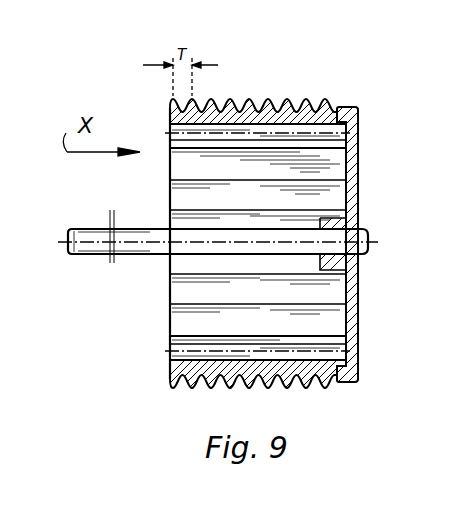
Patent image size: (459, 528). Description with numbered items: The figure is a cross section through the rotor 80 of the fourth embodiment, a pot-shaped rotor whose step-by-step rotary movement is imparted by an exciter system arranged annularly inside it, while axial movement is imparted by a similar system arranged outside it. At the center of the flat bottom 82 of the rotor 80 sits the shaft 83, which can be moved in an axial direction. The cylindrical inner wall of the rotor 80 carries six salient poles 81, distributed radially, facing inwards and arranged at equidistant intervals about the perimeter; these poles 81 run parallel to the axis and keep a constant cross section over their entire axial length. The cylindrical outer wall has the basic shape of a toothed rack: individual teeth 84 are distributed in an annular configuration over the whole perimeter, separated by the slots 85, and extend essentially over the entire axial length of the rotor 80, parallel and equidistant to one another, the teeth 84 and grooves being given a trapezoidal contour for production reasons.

The rotor 80 is at (343, 95).
The salient poles 81 is at (350, 131).
The flat bottom 82 is at (353, 171).
The shaft 83 is at (141, 237).
The teeth 84 is at (250, 97).
The slots 85 is at (306, 97).